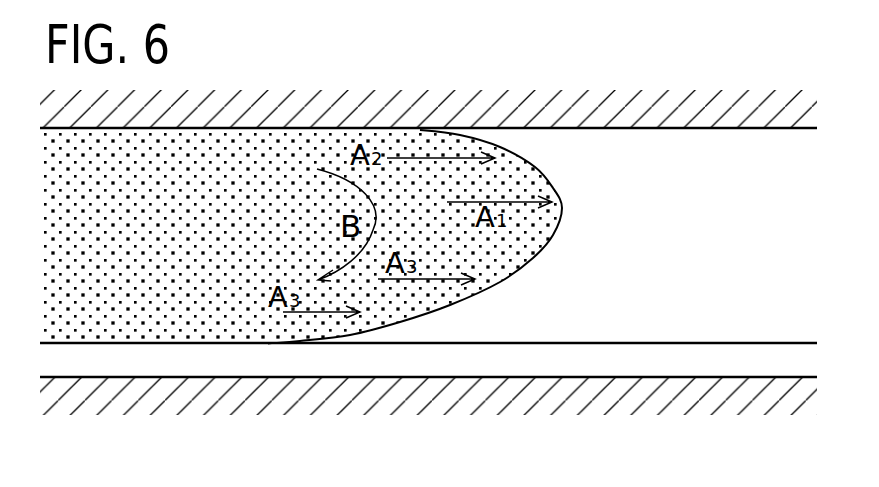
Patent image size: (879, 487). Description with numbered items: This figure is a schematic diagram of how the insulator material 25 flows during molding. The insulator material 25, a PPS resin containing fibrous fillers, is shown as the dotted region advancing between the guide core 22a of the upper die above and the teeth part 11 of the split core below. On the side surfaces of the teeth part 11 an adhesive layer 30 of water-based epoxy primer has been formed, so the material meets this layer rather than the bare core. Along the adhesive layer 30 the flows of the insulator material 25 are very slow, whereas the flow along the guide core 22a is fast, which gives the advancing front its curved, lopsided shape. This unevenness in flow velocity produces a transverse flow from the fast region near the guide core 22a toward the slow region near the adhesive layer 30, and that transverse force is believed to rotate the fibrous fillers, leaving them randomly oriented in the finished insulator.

The guide core 22a is at (755, 128).
The adhesive layer 30 is at (686, 350).
The teeth part 11 is at (758, 385).
The insulator material 25 is at (382, 303).